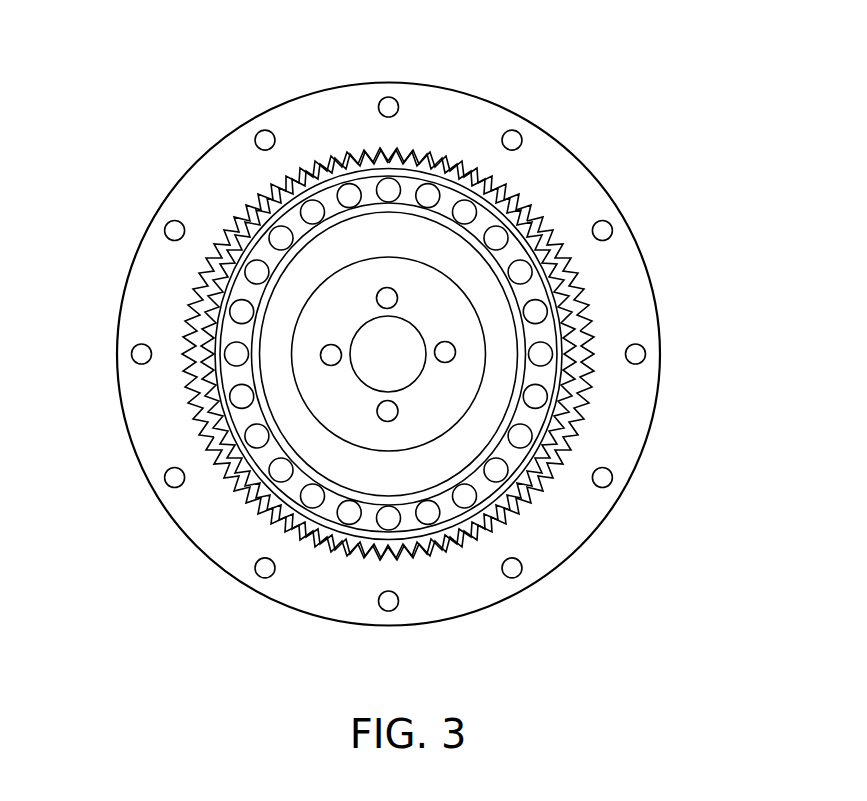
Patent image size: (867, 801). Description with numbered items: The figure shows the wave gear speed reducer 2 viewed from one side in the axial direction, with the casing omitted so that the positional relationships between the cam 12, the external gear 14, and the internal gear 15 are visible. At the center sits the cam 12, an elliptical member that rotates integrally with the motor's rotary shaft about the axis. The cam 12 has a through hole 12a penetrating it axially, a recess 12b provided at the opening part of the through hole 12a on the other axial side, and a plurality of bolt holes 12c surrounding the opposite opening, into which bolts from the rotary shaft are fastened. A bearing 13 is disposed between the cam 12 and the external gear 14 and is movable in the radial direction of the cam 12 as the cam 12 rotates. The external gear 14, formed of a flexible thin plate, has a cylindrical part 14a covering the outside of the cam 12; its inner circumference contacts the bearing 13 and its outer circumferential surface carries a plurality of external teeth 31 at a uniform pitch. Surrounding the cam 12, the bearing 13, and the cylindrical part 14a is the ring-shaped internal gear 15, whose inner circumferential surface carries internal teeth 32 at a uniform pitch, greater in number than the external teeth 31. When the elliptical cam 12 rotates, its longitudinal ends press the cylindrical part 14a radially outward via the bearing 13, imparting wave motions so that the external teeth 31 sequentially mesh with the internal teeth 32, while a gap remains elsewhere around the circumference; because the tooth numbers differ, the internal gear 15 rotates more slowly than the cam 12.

The wave gear speed reducer 2 is at (648, 95).
The cam 12 is at (275, 310).
The through hole 12a is at (426, 354).
The recess 12b is at (481, 382).
The bolt holes 12c is at (388, 410).
The bearing 13 is at (540, 395).
The external gear 14 is at (329, 148).
The cylindrical part 14a is at (587, 370).
The internal gear 15 is at (133, 414).
The external teeth 31 is at (583, 291).
The internal teeth 32 is at (240, 486).